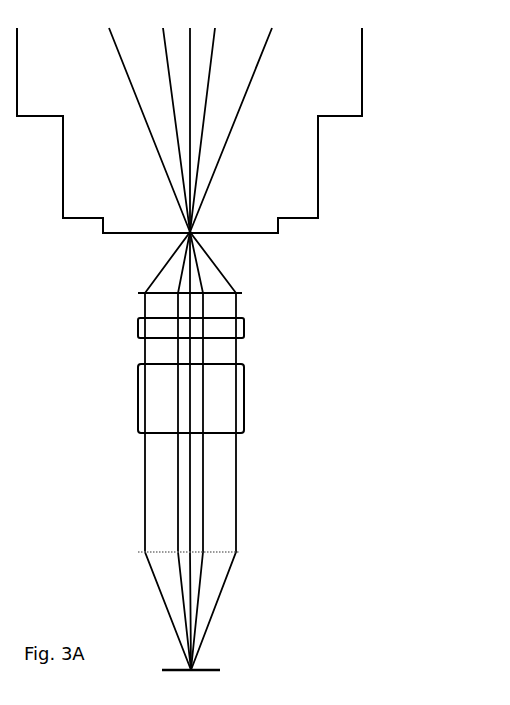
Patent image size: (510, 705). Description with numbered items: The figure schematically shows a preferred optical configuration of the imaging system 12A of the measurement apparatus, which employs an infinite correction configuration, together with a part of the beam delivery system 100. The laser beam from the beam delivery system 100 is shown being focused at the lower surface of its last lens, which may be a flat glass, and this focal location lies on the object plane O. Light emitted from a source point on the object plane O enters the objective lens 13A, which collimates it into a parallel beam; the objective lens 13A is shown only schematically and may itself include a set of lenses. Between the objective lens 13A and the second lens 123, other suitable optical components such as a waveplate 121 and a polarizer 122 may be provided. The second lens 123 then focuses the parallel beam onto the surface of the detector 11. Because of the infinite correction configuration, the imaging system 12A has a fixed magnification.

The beam delivery system 100 is at (376, 68).
The object plane O is at (182, 234).
The objective lens 13A is at (240, 293).
The waveplate 121 is at (246, 328).
The polarizer 122 is at (226, 401).
The second lens 123 is at (224, 546).
The detector 11 is at (211, 664).
The imaging system 12A is at (96, 273).